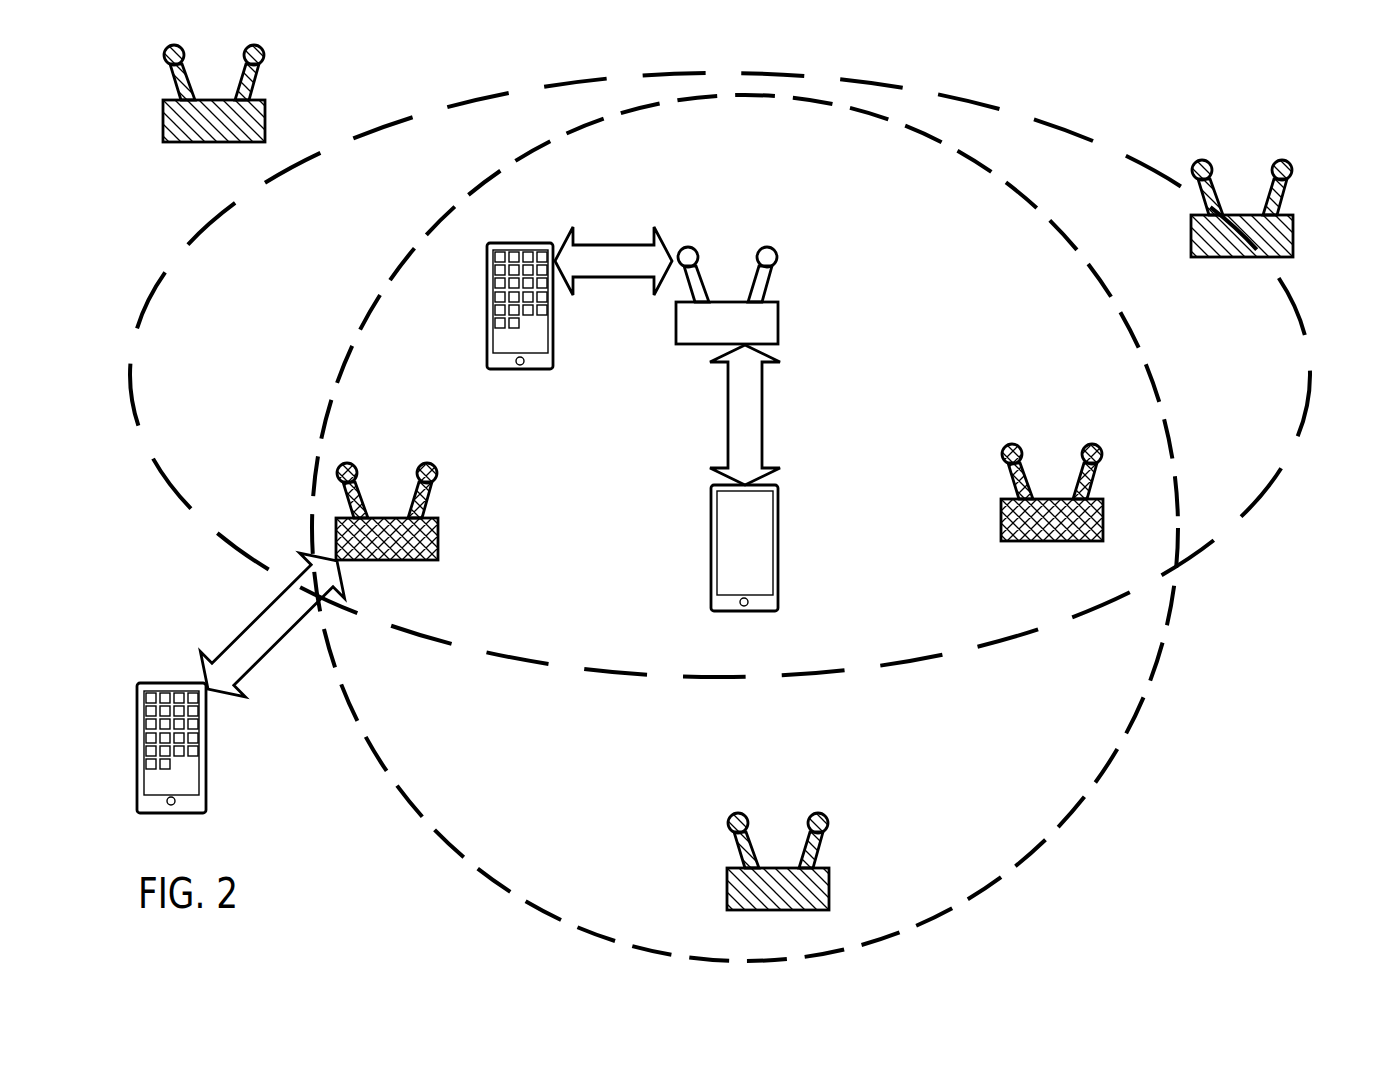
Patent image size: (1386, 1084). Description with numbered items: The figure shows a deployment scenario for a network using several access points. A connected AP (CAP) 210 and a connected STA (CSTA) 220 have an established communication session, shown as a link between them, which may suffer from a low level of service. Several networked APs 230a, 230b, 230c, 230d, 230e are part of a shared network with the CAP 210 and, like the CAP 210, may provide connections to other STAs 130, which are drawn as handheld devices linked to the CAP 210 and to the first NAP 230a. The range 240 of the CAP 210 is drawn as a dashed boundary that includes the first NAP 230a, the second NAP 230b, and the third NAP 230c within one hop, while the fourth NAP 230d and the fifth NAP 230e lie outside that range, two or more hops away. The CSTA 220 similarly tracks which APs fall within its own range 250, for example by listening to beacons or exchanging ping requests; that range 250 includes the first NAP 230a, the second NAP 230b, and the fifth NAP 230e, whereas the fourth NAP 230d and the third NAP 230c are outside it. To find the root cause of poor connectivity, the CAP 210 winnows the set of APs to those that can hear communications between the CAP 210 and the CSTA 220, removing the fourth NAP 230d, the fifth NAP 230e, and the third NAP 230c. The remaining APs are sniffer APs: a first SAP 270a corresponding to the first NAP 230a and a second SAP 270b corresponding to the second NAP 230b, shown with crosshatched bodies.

The STA 130 is at (505, 370).
The connected AP (CAP) 210 is at (778, 327).
The connected STA (CSTA) 220 is at (778, 568).
The first NAP 230a is at (465, 514).
The second NAP 230b is at (979, 487).
The third NAP 230c is at (1294, 212).
The fourth NAP 230d is at (248, 140).
The fifth NAP 230e is at (828, 890).
The first SAP 270a is at (438, 542).
The second SAP 270b is at (1000, 518).
The range of the CAP 240 is at (1202, 550).
The range of the CSTA 250 is at (1088, 787).